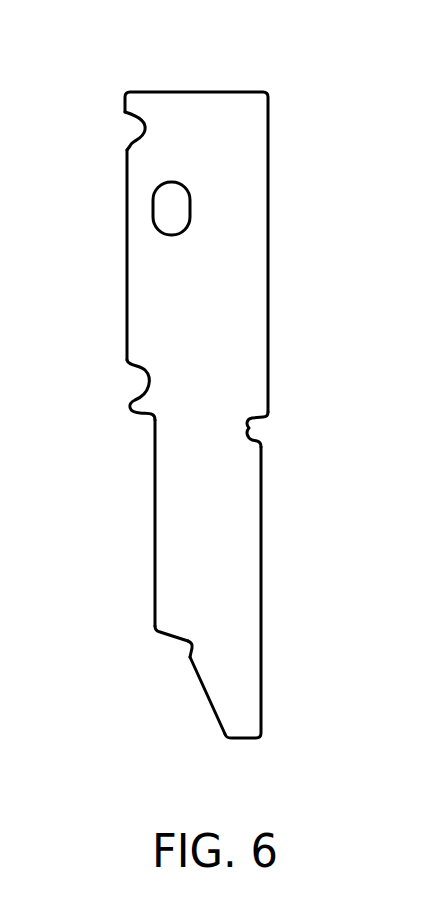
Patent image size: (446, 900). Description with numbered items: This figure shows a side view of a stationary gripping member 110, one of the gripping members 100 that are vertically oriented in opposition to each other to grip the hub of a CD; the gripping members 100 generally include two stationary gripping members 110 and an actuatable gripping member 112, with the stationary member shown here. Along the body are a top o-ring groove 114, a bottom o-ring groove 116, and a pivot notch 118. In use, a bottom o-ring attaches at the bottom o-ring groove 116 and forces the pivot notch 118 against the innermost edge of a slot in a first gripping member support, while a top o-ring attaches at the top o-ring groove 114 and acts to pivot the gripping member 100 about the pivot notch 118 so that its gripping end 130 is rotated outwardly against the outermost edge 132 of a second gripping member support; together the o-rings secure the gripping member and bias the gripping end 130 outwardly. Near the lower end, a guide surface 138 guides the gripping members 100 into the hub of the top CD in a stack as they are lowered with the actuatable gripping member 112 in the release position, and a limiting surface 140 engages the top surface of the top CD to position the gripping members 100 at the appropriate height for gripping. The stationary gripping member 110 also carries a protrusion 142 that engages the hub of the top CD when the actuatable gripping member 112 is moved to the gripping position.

The gripping member 100 is at (290, 82).
The stationary gripping member 110 is at (196, 359).
The actuatable gripping member 112 is at (439, 712).
The top o-ring groove 114 is at (143, 152).
The bottom o-ring groove 116 is at (148, 386).
The pivot notch 118 is at (250, 430).
The gripping end 130 is at (233, 687).
The outermost edge 132 is at (432, 136).
The guide surface 138 is at (210, 705).
The limiting surface 140 is at (165, 638).
The protrusion 142 is at (190, 655).